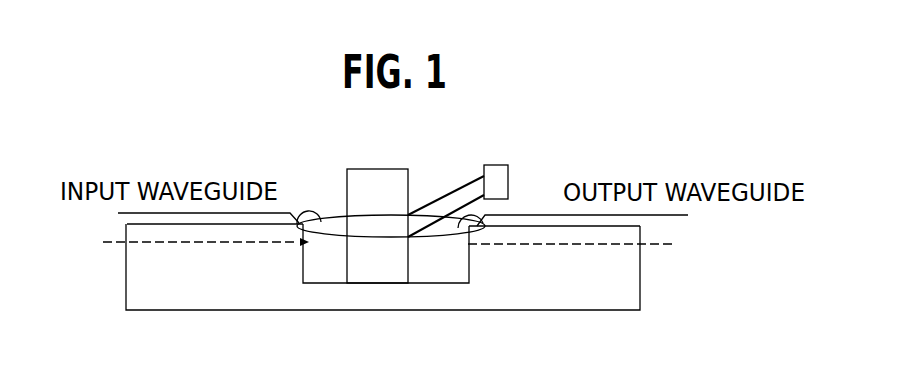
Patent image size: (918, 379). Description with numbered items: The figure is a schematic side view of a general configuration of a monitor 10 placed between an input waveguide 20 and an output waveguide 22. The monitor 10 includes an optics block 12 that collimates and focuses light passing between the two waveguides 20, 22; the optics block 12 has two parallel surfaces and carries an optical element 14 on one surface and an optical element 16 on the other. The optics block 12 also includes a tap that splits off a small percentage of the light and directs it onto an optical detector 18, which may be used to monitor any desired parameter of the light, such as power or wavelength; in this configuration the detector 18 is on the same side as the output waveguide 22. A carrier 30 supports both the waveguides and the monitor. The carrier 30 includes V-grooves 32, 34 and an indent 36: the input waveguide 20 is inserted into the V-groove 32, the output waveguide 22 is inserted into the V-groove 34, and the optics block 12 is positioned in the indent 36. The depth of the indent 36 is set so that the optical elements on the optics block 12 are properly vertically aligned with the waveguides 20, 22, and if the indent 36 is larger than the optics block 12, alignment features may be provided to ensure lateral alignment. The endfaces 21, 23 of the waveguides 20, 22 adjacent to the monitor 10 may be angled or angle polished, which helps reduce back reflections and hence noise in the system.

The monitor 10 is at (325, 116).
The optics block 12 is at (385, 169).
The optical element 14 is at (343, 222).
The optical element 16 is at (410, 215).
The optical detector 18 is at (508, 165).
The input waveguide 20 is at (135, 218).
The endface 21 is at (306, 233).
The output waveguide 22 is at (640, 226).
The endface 23 is at (457, 226).
The carrier 30 is at (632, 290).
The V-groove 32 is at (134, 232).
The V-groove 34 is at (617, 235).
The indent 36 is at (320, 270).